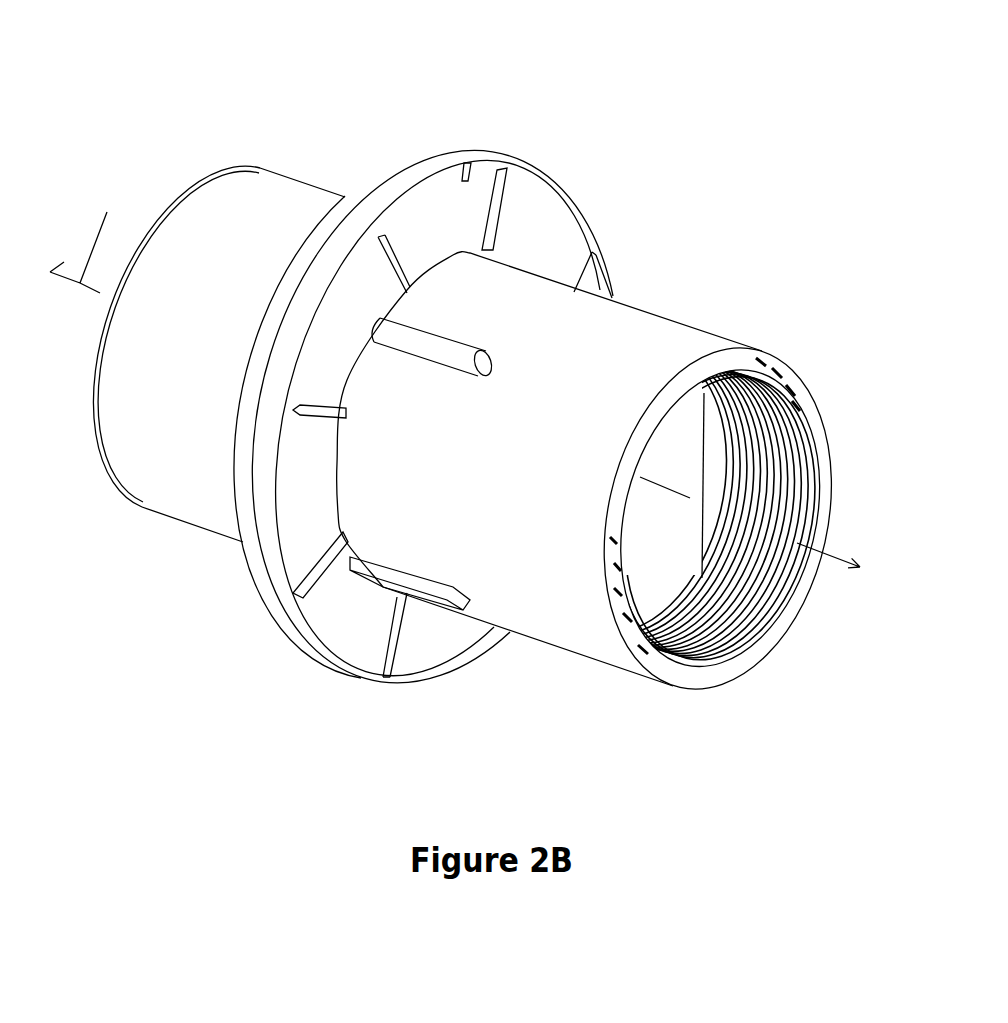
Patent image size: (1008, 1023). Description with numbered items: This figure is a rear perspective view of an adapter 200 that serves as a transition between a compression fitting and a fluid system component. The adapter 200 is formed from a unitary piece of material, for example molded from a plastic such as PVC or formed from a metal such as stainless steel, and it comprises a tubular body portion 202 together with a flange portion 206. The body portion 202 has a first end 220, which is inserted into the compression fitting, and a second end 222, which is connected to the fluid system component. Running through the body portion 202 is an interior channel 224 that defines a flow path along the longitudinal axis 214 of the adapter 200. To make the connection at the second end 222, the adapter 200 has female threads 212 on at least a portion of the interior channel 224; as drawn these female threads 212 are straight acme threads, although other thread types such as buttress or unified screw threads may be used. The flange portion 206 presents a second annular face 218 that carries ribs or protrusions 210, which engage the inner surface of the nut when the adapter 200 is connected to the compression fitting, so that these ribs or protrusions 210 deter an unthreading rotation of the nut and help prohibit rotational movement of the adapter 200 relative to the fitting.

The adapter 200 is at (691, 117).
The body portion 202 is at (655, 330).
The flange portion 206 is at (433, 157).
The ribs or protrusions 210 is at (522, 168).
The female threads 212 is at (771, 375).
The longitudinal axis 214 is at (455, 376).
The second annular face 218 is at (463, 177).
The first end 220 is at (145, 530).
The second end 222 is at (610, 705).
The interior channel 224 is at (703, 653).